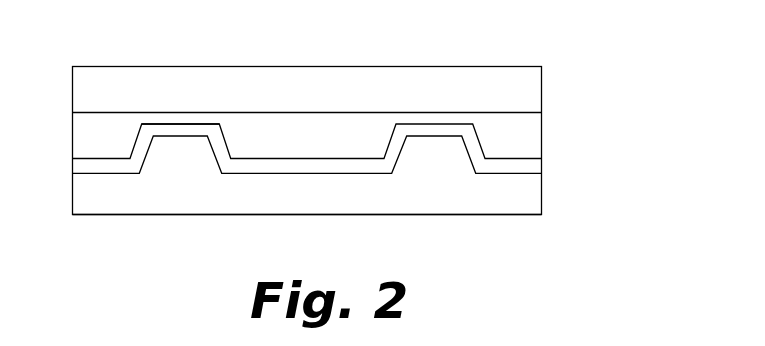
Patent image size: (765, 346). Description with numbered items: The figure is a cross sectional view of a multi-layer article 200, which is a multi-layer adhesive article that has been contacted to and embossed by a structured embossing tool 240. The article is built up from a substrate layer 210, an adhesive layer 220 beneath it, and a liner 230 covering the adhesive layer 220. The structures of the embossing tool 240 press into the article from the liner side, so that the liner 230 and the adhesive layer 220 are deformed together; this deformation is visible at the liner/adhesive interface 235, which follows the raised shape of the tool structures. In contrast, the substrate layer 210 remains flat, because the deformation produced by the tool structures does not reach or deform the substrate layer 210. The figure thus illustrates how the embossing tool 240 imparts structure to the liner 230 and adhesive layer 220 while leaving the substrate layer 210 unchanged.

The multi-layer article 200 is at (558, 36).
The substrate layer 210 is at (542, 83).
The adhesive layer 220 is at (542, 132).
The liner 230 is at (542, 165).
The embossing tool 240 is at (542, 197).
The liner/adhesive interface 235 is at (183, 124).